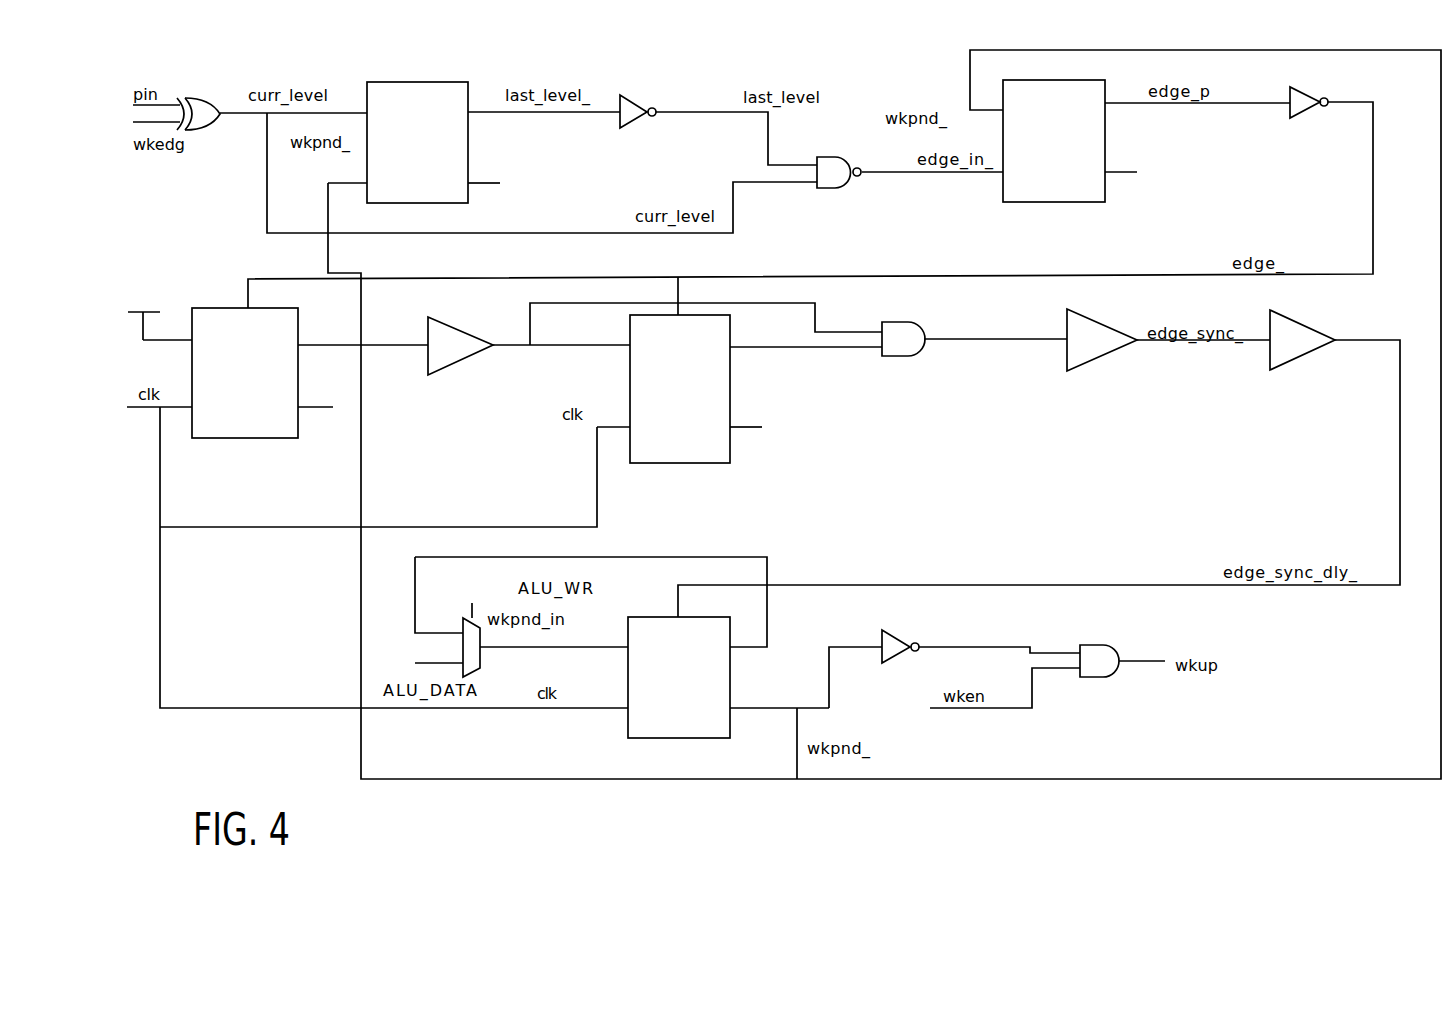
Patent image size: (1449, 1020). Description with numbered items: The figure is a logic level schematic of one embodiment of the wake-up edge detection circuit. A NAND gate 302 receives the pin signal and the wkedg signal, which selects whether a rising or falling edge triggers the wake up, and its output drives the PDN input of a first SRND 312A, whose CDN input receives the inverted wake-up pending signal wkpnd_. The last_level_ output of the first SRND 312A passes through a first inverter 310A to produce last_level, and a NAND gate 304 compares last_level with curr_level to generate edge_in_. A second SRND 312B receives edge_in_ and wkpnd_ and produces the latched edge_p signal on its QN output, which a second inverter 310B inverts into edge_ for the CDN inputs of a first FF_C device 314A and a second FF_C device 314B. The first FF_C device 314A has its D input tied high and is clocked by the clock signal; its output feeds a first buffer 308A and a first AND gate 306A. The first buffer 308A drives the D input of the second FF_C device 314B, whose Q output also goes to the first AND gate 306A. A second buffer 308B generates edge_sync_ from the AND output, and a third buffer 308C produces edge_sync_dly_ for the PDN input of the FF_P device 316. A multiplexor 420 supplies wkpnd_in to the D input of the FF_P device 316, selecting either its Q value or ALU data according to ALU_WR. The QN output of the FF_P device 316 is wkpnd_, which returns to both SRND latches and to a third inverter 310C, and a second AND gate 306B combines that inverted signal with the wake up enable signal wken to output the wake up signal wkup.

The NAND gate 302 is at (185, 100).
The NAND gate 304 is at (838, 190).
The first AND gate 306A is at (895, 357).
The second AND gate 306B is at (1100, 645).
The first buffer 308A is at (458, 365).
The second buffer 308B is at (1113, 355).
The third buffer 308C is at (1287, 363).
The first inverter 310A is at (641, 100).
The second inverter 310B is at (1305, 98).
The third inverter 310C is at (908, 645).
The first SRND 312A is at (417, 82).
The second SRND 312B is at (1037, 203).
The first FF_C device 314A is at (208, 440).
The second FF_C device 314B is at (675, 465).
The FF_P device 316 is at (652, 616).
The multiplexor 420 is at (482, 663).